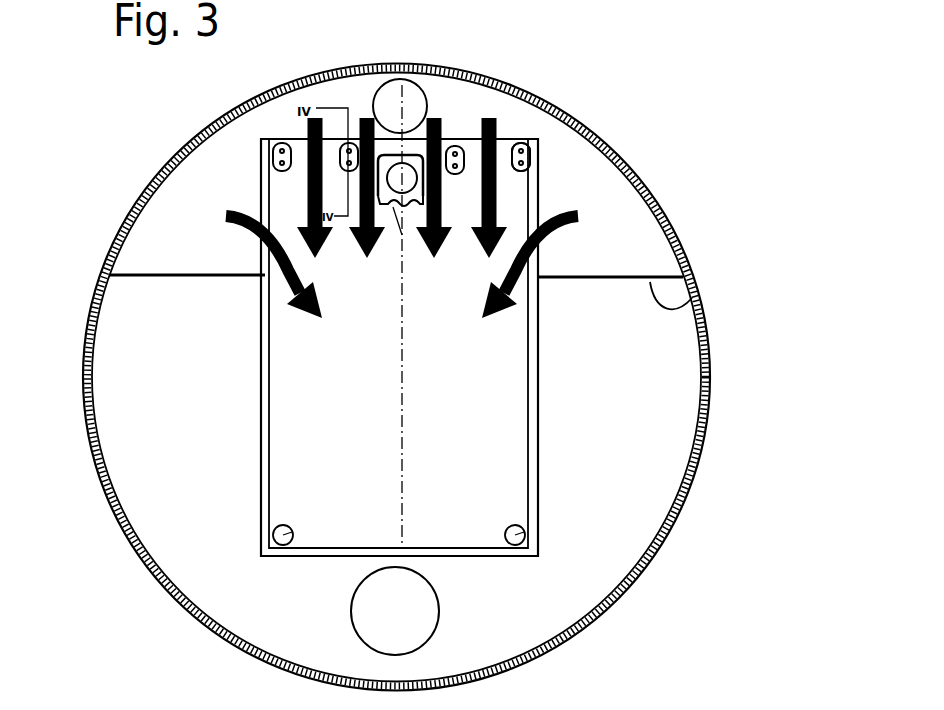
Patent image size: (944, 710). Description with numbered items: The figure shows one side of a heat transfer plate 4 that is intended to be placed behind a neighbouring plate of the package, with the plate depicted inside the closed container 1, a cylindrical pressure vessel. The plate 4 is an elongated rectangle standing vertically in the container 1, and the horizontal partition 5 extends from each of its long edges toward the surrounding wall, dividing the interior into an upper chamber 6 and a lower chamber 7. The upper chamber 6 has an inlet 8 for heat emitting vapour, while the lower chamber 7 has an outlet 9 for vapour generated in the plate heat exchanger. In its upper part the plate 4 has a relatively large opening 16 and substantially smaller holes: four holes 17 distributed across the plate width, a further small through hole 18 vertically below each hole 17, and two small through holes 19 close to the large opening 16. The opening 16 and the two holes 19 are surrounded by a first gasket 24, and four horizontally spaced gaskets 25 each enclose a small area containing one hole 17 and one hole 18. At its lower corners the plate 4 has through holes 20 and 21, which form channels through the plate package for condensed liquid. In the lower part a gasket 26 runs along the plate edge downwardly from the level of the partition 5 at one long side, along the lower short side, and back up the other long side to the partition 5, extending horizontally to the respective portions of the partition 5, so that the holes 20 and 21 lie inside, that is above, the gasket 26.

The container 1 is at (717, 415).
The heat transfer plate 4 is at (260, 332).
The partition 5 is at (702, 293).
The upper chamber 6 is at (653, 253).
The lower chamber 7 is at (647, 467).
The inlet 8 is at (400, 94).
The outlet 9 is at (422, 612).
The opening 16 is at (420, 137).
The hole 17 is at (530, 143).
The through hole 18 is at (538, 175).
The through hole 19 is at (402, 210).
The through hole 20 is at (262, 527).
The through hole 21 is at (540, 526).
The first gasket 24 is at (363, 110).
The gasket 25 is at (530, 162).
The gasket 26 is at (268, 385).